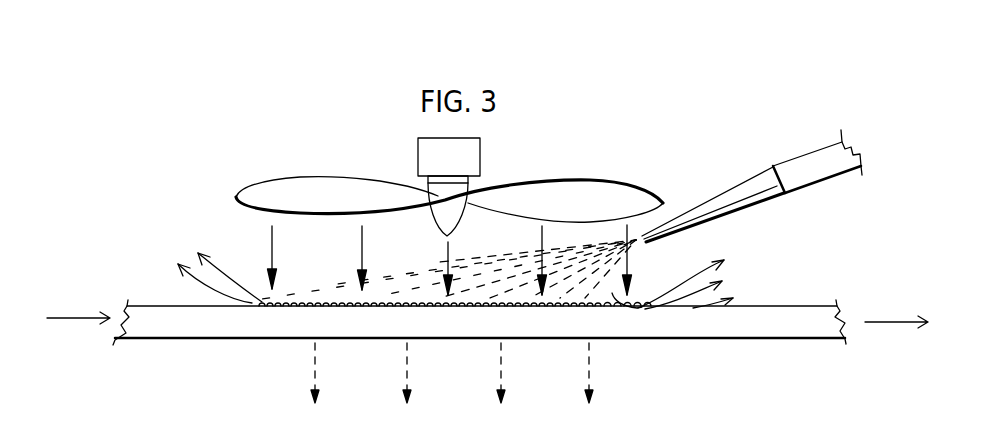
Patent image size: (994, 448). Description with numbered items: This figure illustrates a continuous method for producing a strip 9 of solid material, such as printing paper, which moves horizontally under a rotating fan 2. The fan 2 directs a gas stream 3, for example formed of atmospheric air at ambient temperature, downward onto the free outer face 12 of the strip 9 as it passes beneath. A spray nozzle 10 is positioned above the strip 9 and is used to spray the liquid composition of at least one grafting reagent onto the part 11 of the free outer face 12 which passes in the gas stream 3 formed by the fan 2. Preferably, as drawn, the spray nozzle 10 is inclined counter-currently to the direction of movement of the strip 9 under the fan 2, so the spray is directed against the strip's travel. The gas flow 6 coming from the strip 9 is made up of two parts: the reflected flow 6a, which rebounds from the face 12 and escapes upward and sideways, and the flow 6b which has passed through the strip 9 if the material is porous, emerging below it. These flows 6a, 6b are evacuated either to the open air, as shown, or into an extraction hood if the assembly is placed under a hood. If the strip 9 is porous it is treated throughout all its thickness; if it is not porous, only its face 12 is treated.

The rotating fan 2 is at (579, 193).
The gas stream 3 is at (282, 233).
The gas flow 6 is at (461, 318).
The reflected flow 6a is at (192, 263).
The flow having passed through the sample 6b is at (558, 365).
The strip of solid material 9 is at (479, 331).
The spray nozzle 10 is at (757, 184).
The part of the free outer face 11 is at (588, 308).
The free outer face 12 is at (768, 287).